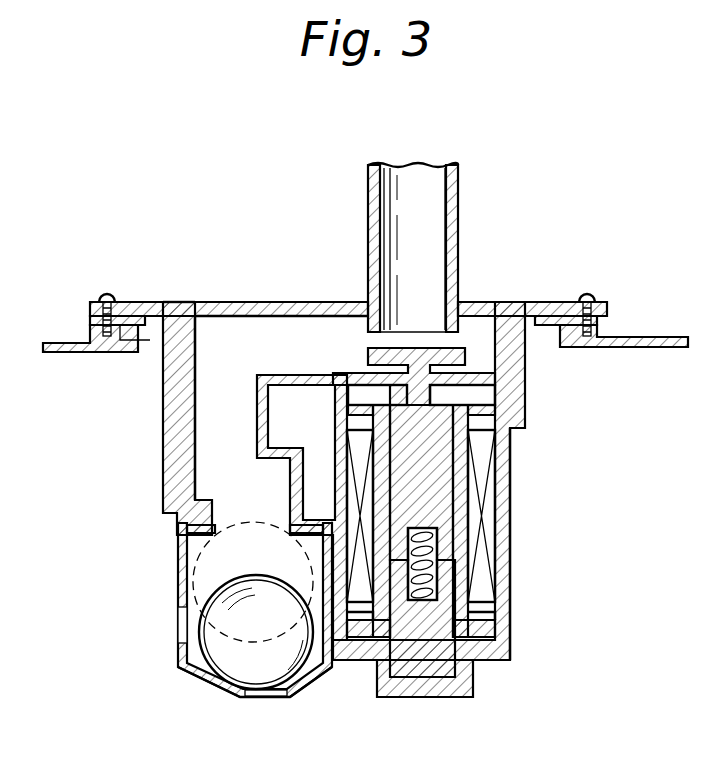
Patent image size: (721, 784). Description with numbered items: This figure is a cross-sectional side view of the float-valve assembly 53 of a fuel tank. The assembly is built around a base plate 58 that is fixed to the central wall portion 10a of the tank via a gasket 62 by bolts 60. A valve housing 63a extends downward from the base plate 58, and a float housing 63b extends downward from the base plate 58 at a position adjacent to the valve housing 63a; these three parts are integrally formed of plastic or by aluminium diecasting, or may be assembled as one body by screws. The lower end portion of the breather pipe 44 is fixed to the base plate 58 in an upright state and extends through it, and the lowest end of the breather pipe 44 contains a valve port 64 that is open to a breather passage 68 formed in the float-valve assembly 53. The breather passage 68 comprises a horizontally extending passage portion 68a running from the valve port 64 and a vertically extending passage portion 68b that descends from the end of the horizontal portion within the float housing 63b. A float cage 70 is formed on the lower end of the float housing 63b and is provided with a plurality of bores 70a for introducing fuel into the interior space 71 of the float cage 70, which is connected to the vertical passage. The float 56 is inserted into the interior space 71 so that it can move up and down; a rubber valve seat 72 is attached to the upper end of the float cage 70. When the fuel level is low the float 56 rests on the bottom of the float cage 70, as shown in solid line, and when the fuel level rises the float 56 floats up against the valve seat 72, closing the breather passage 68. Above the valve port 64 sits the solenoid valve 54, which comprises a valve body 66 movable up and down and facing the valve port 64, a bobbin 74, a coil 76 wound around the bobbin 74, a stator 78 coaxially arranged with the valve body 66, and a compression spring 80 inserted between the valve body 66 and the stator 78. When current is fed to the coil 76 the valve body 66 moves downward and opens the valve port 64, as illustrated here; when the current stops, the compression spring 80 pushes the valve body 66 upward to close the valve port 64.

The central wall portion 10a is at (66, 348).
The breather pipe 44 is at (459, 230).
The float-valve assembly 53 is at (235, 296).
The solenoid valve 54 is at (514, 509).
The float 56 is at (272, 691).
The base plate 58 is at (137, 304).
The bolts 60 is at (104, 297).
The gasket 62 is at (95, 321).
The valve housing 63a is at (503, 491).
The float housing 63b is at (174, 425).
The valve port 64 is at (372, 331).
The valve body 66 is at (440, 456).
The breather passage 68 is at (214, 432).
The horizontally extending passage portion 68a is at (290, 335).
The vertically extending passage portion 68b is at (218, 386).
The float cage 70 is at (181, 576).
The bores 70a is at (190, 611).
The interior space 71 is at (189, 666).
The valve seat 72 is at (200, 553).
The bobbin 74 is at (510, 546).
The coil 76 is at (488, 576).
The stator 78 is at (425, 620).
The compression spring 80 is at (432, 573).